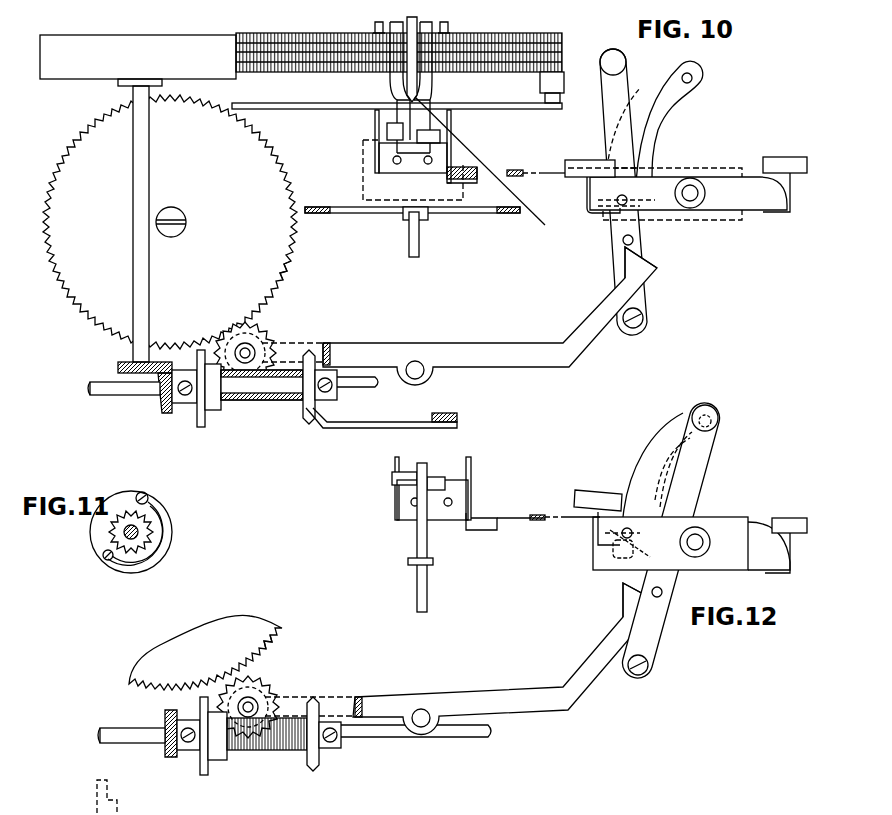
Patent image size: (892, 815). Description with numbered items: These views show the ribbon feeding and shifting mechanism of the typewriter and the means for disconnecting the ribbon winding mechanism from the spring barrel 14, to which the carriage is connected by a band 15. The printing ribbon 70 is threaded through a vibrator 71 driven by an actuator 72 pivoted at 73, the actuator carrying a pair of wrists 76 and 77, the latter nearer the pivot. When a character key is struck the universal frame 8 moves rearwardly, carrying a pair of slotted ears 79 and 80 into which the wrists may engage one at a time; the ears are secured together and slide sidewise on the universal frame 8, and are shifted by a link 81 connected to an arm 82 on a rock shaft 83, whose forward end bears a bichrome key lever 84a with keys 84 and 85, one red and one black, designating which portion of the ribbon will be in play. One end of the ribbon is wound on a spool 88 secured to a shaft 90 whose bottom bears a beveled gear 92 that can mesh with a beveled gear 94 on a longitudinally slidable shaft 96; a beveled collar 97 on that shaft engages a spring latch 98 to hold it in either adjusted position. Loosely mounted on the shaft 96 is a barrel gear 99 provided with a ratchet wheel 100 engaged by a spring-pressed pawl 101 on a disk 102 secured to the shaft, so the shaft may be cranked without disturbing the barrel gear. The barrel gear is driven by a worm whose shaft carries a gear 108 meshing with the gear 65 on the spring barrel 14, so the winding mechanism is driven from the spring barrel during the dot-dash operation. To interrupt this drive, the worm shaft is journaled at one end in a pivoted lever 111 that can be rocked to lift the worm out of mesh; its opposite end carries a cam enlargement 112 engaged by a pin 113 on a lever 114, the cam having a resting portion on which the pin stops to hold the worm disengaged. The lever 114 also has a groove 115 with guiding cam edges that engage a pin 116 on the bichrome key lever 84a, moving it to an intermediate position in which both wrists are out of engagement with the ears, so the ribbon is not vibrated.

In FIG. 10, the universal frame 8 is at (338, 213).
In FIG. 10, the spring barrel 14 is at (170, 222).
In FIG. 12, the spring barrel 14 is at (205, 652).
In FIG. 10, the band 15 is at (270, 108).
In FIG. 10, the gear 65 is at (290, 264).
In FIG. 12, the gear 65 is at (277, 642).
In FIG. 10, the printing ribbon 70 is at (322, 70).
In FIG. 10, the vibrator 71 is at (432, 18).
In FIG. 10, the actuator 72 is at (419, 240).
In FIG. 12, the actuator 72 is at (427, 590).
In FIG. 12, the pivot 73 is at (433, 561).
In FIG. 10, the wrist 76 is at (387, 132).
In FIG. 12, the wrist 76 is at (408, 472).
In FIG. 10, the wrist 77 is at (440, 136).
In FIG. 12, the wrist 77 is at (438, 477).
In FIG. 10, the ear 79 is at (375, 126).
In FIG. 12, the ear 79 is at (395, 465).
In FIG. 10, the ear 80 is at (452, 118).
In FIG. 12, the ear 80 is at (471, 462).
In FIG. 10, the link 81 is at (516, 170).
In FIG. 10, the arm 82 is at (655, 115).
In FIG. 12, the arm 82 is at (656, 465).
In FIG. 10, the rock shaft 83 is at (690, 193).
In FIG. 12, the rock shaft 83 is at (700, 532).
In FIG. 10, the key 84 is at (577, 160).
In FIG. 12, the key 84 is at (589, 490).
In FIG. 10, the bichrome key lever 84a is at (735, 212).
In FIG. 12, the bichrome key lever 84a is at (691, 543).
In FIG. 10, the key 85 is at (773, 157).
In FIG. 12, the key 85 is at (787, 518).
In FIG. 10, the spool 88 is at (138, 60).
In FIG. 10, the shaft 90 is at (150, 266).
In FIG. 10, the beveled gear 92 is at (120, 362).
In FIG. 10, the beveled gear 94 is at (160, 405).
In FIG. 12, the beveled gear 94 is at (165, 718).
In FIG. 10, the shaft 96 is at (358, 385).
In FIG. 12, the shaft 96 is at (383, 732).
In FIG. 10, the beveled collar 97 is at (298, 425).
In FIG. 12, the beveled collar 97 is at (318, 766).
In FIG. 10, the spring latch 98 is at (340, 428).
In FIG. 10, the barrel gear 99 is at (255, 400).
In FIG. 11, the barrel gear 99 is at (150, 531).
In FIG. 12, the barrel gear 99 is at (272, 750).
In FIG. 10, the ratchet wheel 100 is at (207, 418).
In FIG. 11, the ratchet wheel 100 is at (112, 528).
In FIG. 12, the ratchet wheel 100 is at (220, 760).
In FIG. 11, the spring-pressed pawl 101 is at (103, 556).
In FIG. 10, the disk 102 is at (196, 418).
In FIG. 11, the disk 102 is at (140, 492).
In FIG. 12, the disk 102 is at (198, 765).
In FIG. 10, the gear 108 is at (258, 333).
In FIG. 12, the gear 108 is at (262, 685).
In FIG. 10, the lever 111 is at (462, 342).
In FIG. 12, the lever 111 is at (420, 690).
In FIG. 10, the cam enlargement 112 is at (652, 260).
In FIG. 12, the cam enlargement 112 is at (625, 604).
In FIG. 10, the pin 113 is at (633, 237).
In FIG. 12, the pin 113 is at (662, 590).
In FIG. 10, the lever 114 is at (604, 125).
In FIG. 12, the lever 114 is at (700, 457).
In FIG. 12, the groove 115 is at (633, 558).
In FIG. 10, the pin 116 is at (612, 210).
In FIG. 12, the pin 116 is at (618, 535).